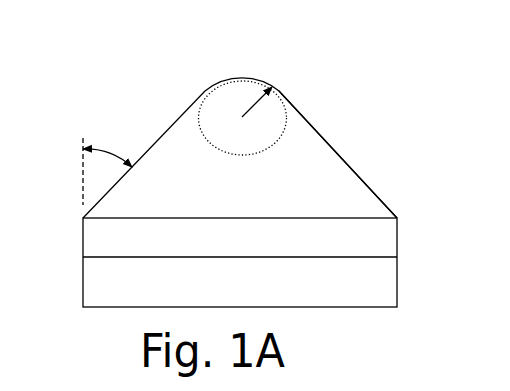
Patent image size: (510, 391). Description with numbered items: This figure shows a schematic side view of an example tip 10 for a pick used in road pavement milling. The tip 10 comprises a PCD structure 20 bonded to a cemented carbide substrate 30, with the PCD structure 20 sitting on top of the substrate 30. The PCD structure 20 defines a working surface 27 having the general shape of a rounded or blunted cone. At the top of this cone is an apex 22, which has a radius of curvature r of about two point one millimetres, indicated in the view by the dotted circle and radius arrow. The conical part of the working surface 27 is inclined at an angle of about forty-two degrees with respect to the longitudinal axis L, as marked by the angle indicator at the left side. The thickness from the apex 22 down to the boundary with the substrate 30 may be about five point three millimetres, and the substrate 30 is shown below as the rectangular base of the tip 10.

The tip 10 is at (258, 157).
The PCD structure 20 is at (243, 117).
The apex 22 is at (243, 77).
The working surface 27 is at (357, 172).
The cemented carbide substrate 30 is at (372, 245).